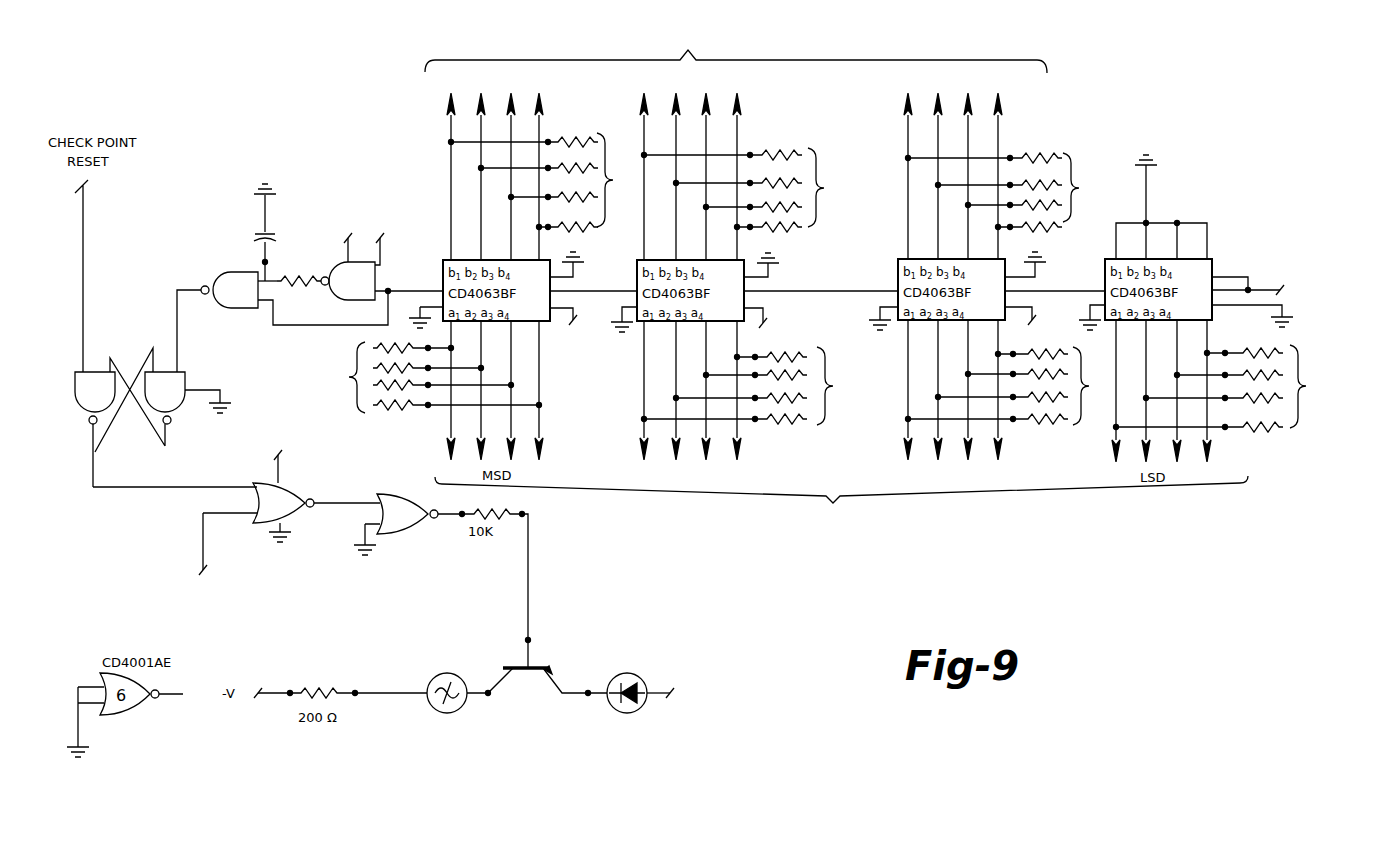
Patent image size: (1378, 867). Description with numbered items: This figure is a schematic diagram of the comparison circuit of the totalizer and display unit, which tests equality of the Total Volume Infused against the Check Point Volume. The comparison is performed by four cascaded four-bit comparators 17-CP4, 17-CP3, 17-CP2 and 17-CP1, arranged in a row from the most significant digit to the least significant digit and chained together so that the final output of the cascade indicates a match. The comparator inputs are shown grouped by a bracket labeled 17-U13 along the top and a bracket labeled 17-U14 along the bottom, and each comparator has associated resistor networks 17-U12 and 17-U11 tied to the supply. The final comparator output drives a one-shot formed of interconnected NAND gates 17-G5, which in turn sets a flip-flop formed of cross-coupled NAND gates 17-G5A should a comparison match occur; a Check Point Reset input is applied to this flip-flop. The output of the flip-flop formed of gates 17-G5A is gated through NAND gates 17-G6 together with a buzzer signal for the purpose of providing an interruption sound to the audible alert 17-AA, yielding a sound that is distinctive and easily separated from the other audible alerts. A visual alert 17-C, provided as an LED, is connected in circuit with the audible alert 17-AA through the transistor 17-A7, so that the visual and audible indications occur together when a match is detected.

The NAND gates 17-G5 is at (217, 272).
The NAND gates 17-G5A is at (153, 405).
The 4-bit comparator 17-CP4 is at (438, 260).
The 4-bit comparator 17-CP3 is at (741, 261).
The 4-bit comparator 17-CP2 is at (1003, 259).
The 4-bit comparator 17-CP1 is at (1208, 258).
The pull-up resistor network 17-U12 is at (781, 182).
The pull-up resistor network 17-U11 is at (798, 401).
The comparator B inputs bus 17-U13 is at (736, 47).
The comparator A inputs bus 17-U14 is at (841, 503).
The NAND gates 17-G6 is at (265, 515).
The audible alert 17-AA is at (445, 675).
The transistor 17-A7 is at (543, 667).
The visual alert 17-C is at (636, 676).